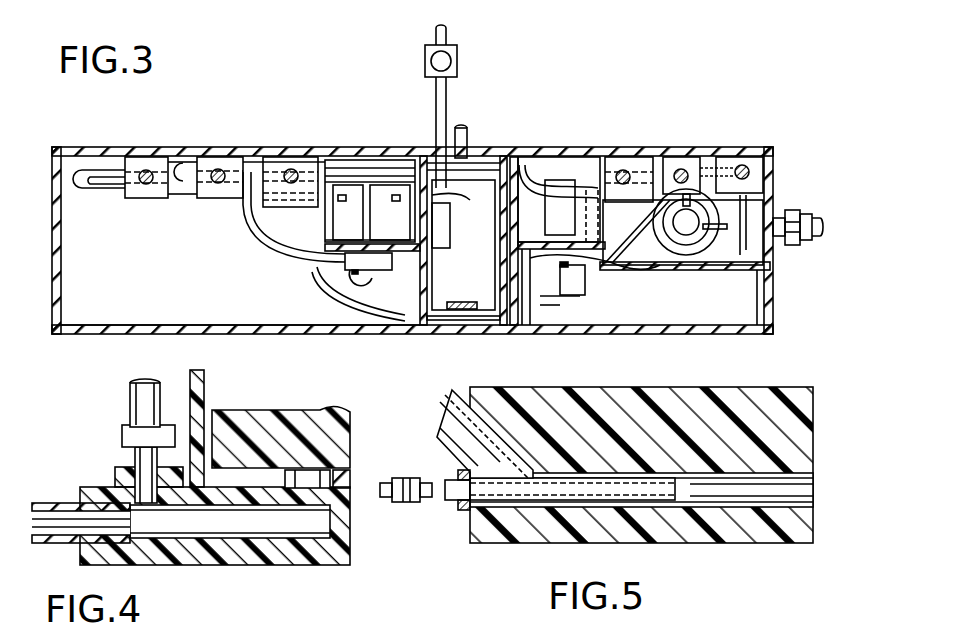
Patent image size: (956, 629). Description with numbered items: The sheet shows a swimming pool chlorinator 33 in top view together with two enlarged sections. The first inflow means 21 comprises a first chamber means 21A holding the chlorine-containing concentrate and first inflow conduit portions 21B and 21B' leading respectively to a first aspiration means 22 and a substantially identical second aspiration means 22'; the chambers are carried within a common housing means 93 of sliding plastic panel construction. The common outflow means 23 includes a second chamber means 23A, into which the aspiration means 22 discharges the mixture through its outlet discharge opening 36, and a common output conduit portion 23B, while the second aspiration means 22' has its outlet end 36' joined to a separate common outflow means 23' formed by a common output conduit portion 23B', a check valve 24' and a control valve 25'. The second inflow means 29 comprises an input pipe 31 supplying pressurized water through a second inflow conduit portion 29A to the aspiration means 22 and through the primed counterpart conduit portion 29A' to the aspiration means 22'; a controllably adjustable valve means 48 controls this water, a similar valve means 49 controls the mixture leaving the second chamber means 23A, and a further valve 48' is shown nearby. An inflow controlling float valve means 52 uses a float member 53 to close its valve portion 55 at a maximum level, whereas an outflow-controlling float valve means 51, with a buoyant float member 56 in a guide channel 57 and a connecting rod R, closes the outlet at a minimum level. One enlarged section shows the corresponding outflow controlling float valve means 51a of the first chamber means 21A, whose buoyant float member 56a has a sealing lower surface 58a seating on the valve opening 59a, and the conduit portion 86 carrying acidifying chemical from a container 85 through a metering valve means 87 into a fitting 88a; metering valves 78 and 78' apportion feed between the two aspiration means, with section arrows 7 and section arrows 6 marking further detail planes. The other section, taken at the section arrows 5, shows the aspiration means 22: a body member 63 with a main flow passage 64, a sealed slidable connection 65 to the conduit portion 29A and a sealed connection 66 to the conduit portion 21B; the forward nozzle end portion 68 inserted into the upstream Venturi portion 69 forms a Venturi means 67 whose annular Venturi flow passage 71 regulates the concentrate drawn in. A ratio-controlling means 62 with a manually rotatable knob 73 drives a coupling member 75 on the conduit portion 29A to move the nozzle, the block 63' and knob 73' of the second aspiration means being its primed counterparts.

In FIG. 3, the first inflow means 21 is at (165, 144).
In FIG. 3, the first chamber means 21A is at (197, 318).
In FIG. 3, the first inflow conduit portion 21B is at (308, 139).
In FIG. 5, the first inflow conduit portion 21B is at (470, 425).
In FIG. 3, the first inflow conduit portion 21B' is at (272, 217).
In FIG. 3, the aspiration means 22 is at (572, 294).
In FIG. 5, the aspiration means 22 is at (641, 489).
In FIG. 3, the second aspiration means 22' is at (351, 333).
In FIG. 3, the common outflow means 23 is at (761, 254).
In FIG. 3, the common outflow means 23' is at (483, 19).
In FIG. 3, the second chamber means 23A is at (740, 295).
In FIG. 3, the common output conduit portion 23B is at (570, 154).
In FIG. 3, the common output conduit portion 23B' is at (468, 106).
In FIG. 3, the check valve 24' is at (463, 240).
In FIG. 3, the control valve 25' is at (465, 61).
In FIG. 3, the second inflow means 29 is at (788, 208).
In FIG. 3, the second inflow conduit portion 29A is at (673, 216).
In FIG. 5, the second inflow conduit portion 29A is at (446, 539).
In FIG. 3, the second inflow conduit portion 29A' is at (313, 283).
In FIG. 3, the input pipe 31 is at (820, 240).
In FIG. 3, the chlorinator 33 is at (764, 64).
In FIG. 5, the outlet discharge opening 36 is at (648, 527).
In FIG. 3, the outlet end 36' is at (370, 201).
In FIG. 3, the controllably adjustable valve means 48 is at (738, 153).
In FIG. 3, the terminal block 48' is at (699, 144).
In FIG. 3, the controllably adjustable valve means 49 is at (622, 158).
In FIG. 3, the outflow-controlling float valve means 51 is at (604, 214).
In FIG. 3, the outflow controlling float valve means 51a is at (339, 224).
In FIG. 4, the outflow controlling float valve means 51a is at (286, 476).
In FIG. 3, the inflow controlling float valve means 52 is at (652, 249).
In FIG. 3, the float member 53 is at (688, 270).
In FIG. 3, the valve portion 55 is at (690, 222).
In FIG. 3, the buoyant float member 56 is at (578, 170).
In FIG. 3, the buoyant float member 56a is at (392, 162).
In FIG. 4, the buoyant float member 56a is at (285, 418).
In FIG. 3, the guide channel 57 is at (621, 189).
In FIG. 4, the sealing lower surface 58a is at (330, 476).
In FIG. 4, the valve opening 59a is at (328, 481).
In FIG. 3, the ratio-controlling means 62 is at (528, 305).
In FIG. 3, the body member 63 is at (485, 241).
In FIG. 5, the body member 63 is at (505, 374).
In FIG. 3, the block 63' is at (343, 294).
In FIG. 5, the main flow passage 64 is at (805, 476).
In FIG. 5, the sealed slidable connection 65 is at (465, 477).
In FIG. 5, the sealed connection 66 is at (470, 401).
In FIG. 3, the Venturi means 67 is at (649, 355).
In FIG. 5, the Venturi means 67 is at (668, 463).
In FIG. 5, the forward nozzle end portion 68 is at (655, 511).
In FIG. 5, the upstream Venturi portion 69 is at (590, 506).
In FIG. 5, the Venturi flow passage 71 is at (592, 478).
In FIG. 3, the manually rotatable knob 73 is at (557, 278).
In FIG. 3, the manually rotatable knob 73' is at (378, 275).
In FIG. 4, the coupling member 75 is at (403, 503).
In FIG. 3, the controllably adjustable metering valve means 78 is at (290, 152).
In FIG. 3, the controllably adjustable metering valve 78' is at (220, 147).
In FIG. 3, the container 85 is at (451, 242).
In FIG. 3, the conduit portion 86 is at (90, 190).
In FIG. 4, the conduit portion 86 is at (58, 545).
In FIG. 3, the controllably adjustable metering valve means 87 is at (139, 199).
In FIG. 4, the fitting 88a is at (170, 565).
In FIG. 3, the common housing means 93 is at (94, 352).
In FIG. 3, the connecting rod R is at (380, 162).
In FIG. 3, the section arrows 5— 5 is at (516, 258).
In FIG. 3, the section line 6 is at (610, 222).
In FIG. 3, the section line 7 is at (258, 200).